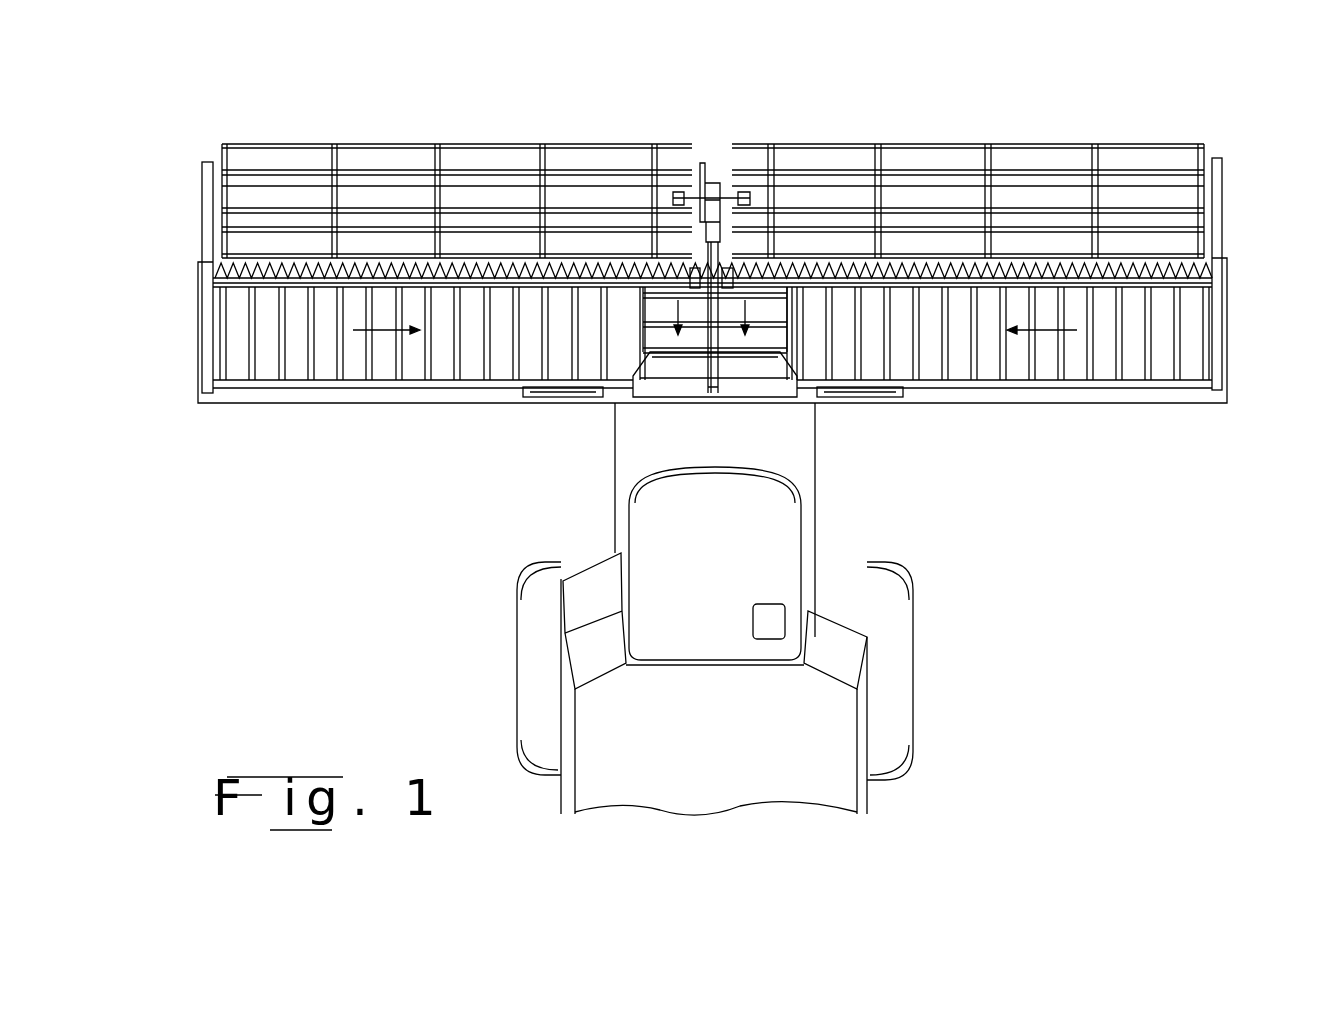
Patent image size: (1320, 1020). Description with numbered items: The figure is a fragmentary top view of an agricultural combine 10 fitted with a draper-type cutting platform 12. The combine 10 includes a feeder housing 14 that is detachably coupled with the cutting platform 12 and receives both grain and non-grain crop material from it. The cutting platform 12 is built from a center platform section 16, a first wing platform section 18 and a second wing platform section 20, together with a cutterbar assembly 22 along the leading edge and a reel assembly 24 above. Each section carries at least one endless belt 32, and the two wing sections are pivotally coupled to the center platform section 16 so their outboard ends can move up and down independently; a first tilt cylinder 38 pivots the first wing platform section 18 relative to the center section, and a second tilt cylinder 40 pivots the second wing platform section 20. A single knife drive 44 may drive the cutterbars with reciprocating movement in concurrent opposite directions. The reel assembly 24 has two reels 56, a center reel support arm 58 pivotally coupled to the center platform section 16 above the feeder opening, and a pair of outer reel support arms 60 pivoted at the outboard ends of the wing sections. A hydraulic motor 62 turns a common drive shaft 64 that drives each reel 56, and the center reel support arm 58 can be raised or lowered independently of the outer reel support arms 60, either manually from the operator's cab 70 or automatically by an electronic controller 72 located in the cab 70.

The combine 10 is at (1023, 597).
The cutting platform 12 is at (1110, 115).
The feeder housing 14 is at (815, 462).
The center platform section 16 is at (645, 308).
The first wing platform section 18 is at (347, 407).
The second wing platform section 20 is at (1083, 408).
The cutterbar assembly 22 is at (1170, 262).
The reel assembly 24 is at (745, 140).
The endless belt 32 is at (273, 367).
The first tilt cylinder 38 is at (584, 397).
The second tilt cylinder 40 is at (845, 397).
The knife drive 44 is at (693, 273).
The reel 56 is at (472, 144).
The center reel support arm 58 is at (703, 335).
The outer reel support arm 60 is at (203, 208).
The hydraulic motor 62 is at (752, 205).
The common drive shaft 64 is at (720, 195).
The operator's cab 70 is at (735, 569).
The electronic controller 72 is at (753, 625).